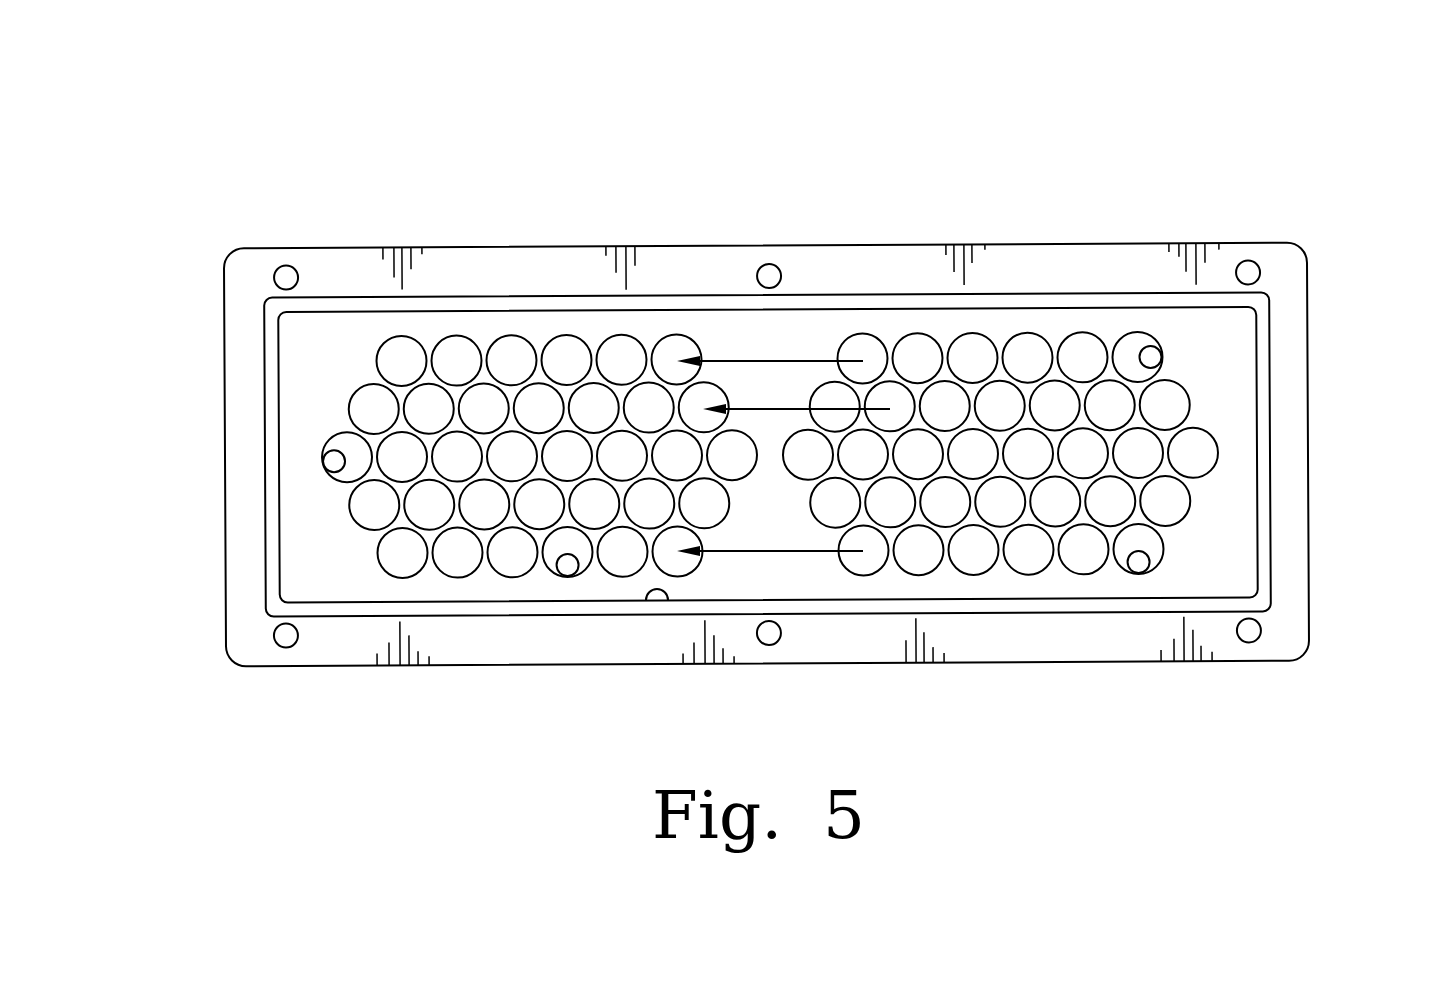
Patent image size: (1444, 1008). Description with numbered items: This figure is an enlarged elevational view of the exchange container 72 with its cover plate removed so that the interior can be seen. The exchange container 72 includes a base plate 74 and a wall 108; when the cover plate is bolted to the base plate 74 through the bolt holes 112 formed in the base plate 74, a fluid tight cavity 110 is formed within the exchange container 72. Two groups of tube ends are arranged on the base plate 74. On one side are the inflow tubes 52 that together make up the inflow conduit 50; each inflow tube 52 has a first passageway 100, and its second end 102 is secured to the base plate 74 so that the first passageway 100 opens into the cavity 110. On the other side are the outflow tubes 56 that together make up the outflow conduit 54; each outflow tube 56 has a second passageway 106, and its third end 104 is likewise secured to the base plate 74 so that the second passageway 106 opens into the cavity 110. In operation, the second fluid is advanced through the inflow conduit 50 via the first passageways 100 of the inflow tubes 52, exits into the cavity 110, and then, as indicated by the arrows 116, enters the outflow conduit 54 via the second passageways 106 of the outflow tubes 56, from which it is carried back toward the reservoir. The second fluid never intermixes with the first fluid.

The inflow conduit 50 is at (1028, 600).
The inflow tube 52 is at (1190, 542).
The outflow conduit 54 is at (526, 302).
The outflow tube 56 is at (380, 353).
The exchange container 72 is at (1350, 128).
The base plate 74 is at (258, 273).
The first passageway 100 is at (1157, 372).
The second end 102 is at (1153, 337).
The third end 104 is at (332, 438).
The second passageway 106 is at (327, 448).
The wall 108 is at (1063, 300).
The cavity 110 is at (647, 600).
The bolt holes 112 is at (783, 270).
The arrows 116 is at (787, 361).